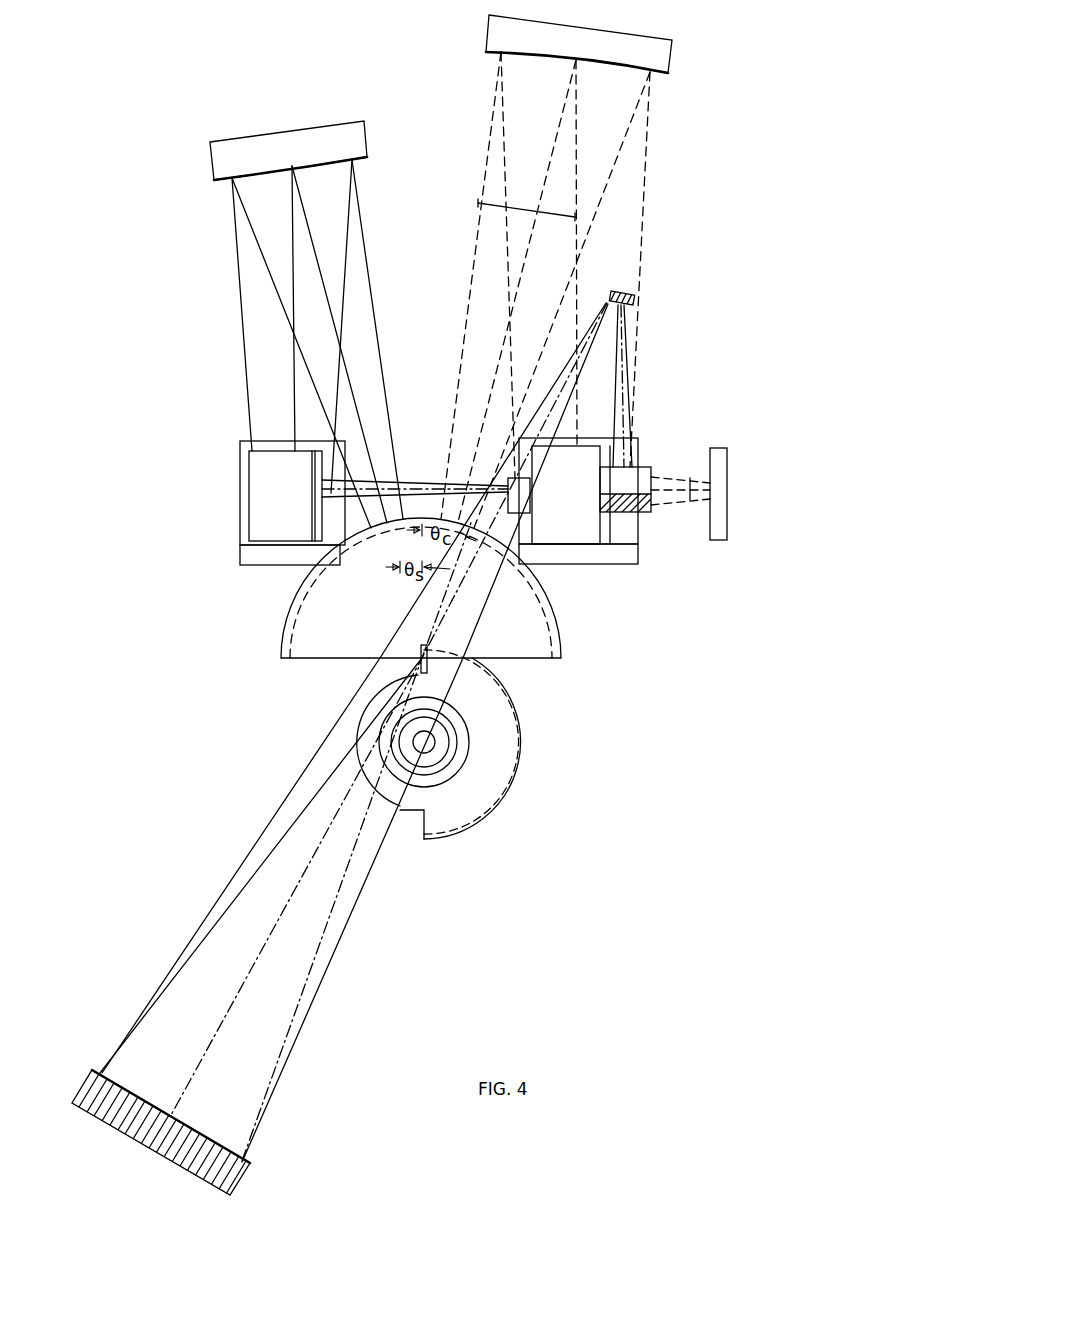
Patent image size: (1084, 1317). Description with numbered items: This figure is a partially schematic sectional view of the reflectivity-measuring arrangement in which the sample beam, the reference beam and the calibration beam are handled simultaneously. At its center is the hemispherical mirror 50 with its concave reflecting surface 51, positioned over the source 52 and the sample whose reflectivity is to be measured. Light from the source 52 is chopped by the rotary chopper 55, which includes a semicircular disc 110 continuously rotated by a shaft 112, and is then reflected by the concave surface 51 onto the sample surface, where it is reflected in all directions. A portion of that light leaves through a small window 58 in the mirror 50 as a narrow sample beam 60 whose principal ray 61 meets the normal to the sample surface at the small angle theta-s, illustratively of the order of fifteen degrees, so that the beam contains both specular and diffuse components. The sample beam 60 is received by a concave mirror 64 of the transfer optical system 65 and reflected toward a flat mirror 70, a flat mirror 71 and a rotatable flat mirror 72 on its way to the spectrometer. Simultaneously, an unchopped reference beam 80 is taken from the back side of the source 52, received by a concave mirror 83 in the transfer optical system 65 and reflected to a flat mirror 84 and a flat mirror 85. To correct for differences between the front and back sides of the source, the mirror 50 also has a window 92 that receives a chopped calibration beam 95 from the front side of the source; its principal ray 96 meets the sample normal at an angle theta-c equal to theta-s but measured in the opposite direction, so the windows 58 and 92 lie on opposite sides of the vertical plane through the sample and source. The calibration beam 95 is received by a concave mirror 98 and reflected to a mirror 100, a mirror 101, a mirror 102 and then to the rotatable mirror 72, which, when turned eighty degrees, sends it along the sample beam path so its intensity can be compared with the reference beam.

The hemispherical mirror 50 is at (556, 650).
The concave reflecting surface 51 is at (531, 664).
The source 52 is at (420, 661).
The rotary chopper 55 is at (519, 766).
The window 58 is at (370, 545).
The sample beam 60 is at (298, 348).
The principal ray 61 is at (353, 390).
The concave mirror 64 is at (306, 137).
The transfer optical system 65 is at (236, 486).
The flat mirror 70 is at (244, 441).
The flat mirror 71 is at (249, 520).
The rotatable flat mirror 72 is at (507, 482).
The reference beam 80 is at (619, 418).
The concave mirror 83 is at (90, 1072).
The flat mirror 84 is at (622, 291).
The flat mirror 85 is at (648, 512).
The window 92 is at (443, 513).
The calibration beam 95 is at (498, 207).
The principal ray 96 is at (549, 158).
The concave mirror 98 is at (672, 62).
The mirror 100 is at (580, 565).
The mirror 101 is at (613, 537).
The mirror 102 is at (728, 506).
The semicircular disc 110 is at (427, 829).
The shaft 112 is at (430, 752).